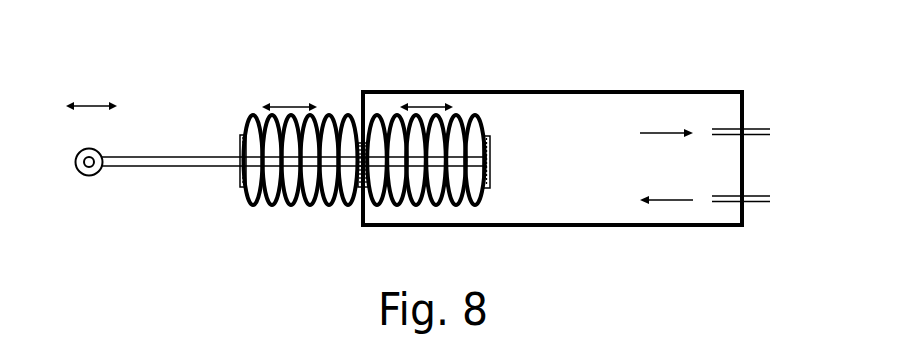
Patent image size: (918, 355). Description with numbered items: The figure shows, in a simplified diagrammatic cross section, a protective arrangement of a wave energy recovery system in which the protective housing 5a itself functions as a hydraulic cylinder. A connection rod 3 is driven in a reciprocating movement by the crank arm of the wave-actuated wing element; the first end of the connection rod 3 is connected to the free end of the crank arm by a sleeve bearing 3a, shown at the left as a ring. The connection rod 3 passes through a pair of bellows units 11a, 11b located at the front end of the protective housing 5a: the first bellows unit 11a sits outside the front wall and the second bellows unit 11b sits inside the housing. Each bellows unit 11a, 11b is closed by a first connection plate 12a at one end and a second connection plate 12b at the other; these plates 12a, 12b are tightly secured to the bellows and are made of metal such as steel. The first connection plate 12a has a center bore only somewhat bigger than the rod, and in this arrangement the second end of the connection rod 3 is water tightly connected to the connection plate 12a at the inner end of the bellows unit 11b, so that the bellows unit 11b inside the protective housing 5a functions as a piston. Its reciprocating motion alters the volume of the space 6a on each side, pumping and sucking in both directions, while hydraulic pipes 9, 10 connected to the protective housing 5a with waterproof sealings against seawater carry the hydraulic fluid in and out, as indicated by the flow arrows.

The connection rod 3 is at (166, 158).
The sleeve bearing 3a is at (84, 175).
The protective housing 5a is at (603, 90).
The space 6a is at (600, 227).
The hydraulic pipe 9 is at (753, 128).
The hydraulic pipe 10 is at (757, 203).
The first bellows unit 11a is at (338, 97).
The second bellows unit 11b is at (470, 110).
The first connection plate 12a is at (240, 142).
The second connection plate 12b is at (361, 190).